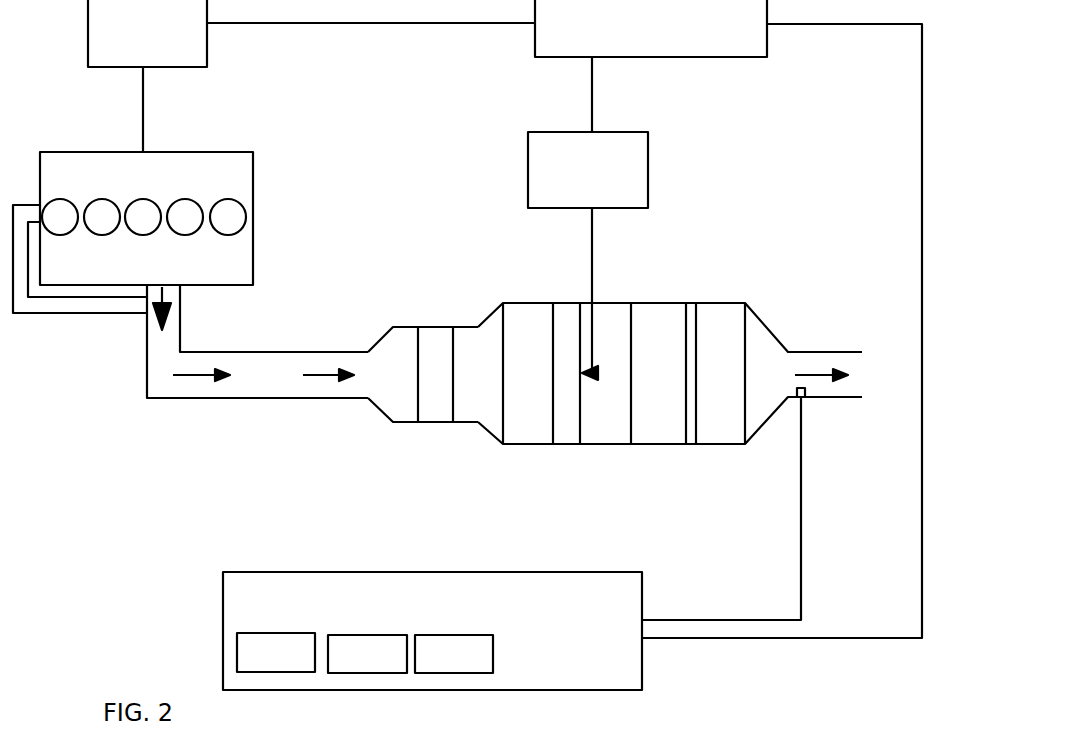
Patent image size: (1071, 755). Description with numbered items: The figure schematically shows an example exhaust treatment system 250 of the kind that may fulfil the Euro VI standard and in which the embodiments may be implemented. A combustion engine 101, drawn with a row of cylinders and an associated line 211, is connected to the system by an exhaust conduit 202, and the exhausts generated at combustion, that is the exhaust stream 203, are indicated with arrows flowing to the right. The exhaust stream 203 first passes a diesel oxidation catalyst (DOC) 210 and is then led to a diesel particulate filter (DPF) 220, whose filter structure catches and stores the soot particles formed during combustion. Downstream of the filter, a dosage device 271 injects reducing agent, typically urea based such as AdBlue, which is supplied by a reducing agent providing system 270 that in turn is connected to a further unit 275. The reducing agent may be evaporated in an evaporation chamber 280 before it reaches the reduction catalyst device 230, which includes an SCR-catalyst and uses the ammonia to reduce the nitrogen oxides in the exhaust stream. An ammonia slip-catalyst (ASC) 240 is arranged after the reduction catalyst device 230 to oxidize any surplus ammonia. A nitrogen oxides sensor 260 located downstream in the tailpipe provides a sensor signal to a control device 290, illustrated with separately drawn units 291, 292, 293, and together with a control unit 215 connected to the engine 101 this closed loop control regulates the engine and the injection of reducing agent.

The combustion engine 101 is at (243, 182).
The exhaust conduit 202 is at (222, 393).
The exhaust stream 203 is at (337, 357).
The diesel oxidation catalyst (DOC) 210 is at (445, 335).
The EGR line 211 is at (60, 308).
The control unit 215 is at (147, 33).
The diesel particulate filter (DPF) 220 is at (528, 325).
The reduction catalyst device 230 is at (663, 322).
The ammonia slip-catalyst (ASC) 240 is at (732, 322).
The exhaust treatment system 250 is at (452, 217).
The nitrogen oxides sensor 260 is at (807, 393).
The reducing agent providing system 270 is at (588, 215).
The dosage device 271 is at (597, 370).
The reductant supply/controller 275 is at (651, 28).
The evaporation chamber 280 is at (618, 433).
The control device 290 is at (432, 631).
The unit 291 is at (276, 652).
The unit 292 is at (367, 654).
The unit 293 is at (454, 654).